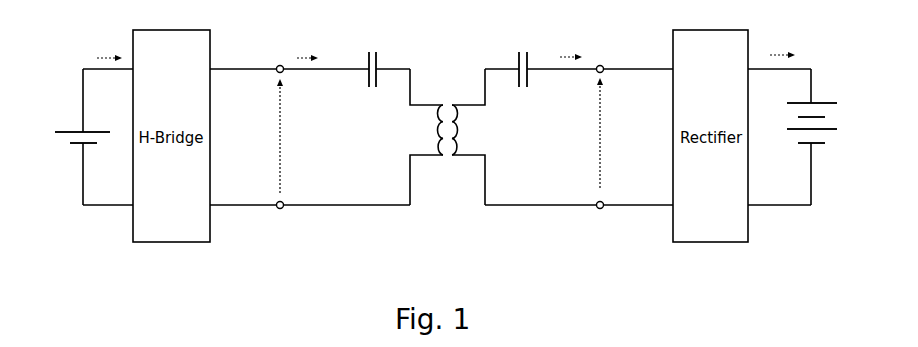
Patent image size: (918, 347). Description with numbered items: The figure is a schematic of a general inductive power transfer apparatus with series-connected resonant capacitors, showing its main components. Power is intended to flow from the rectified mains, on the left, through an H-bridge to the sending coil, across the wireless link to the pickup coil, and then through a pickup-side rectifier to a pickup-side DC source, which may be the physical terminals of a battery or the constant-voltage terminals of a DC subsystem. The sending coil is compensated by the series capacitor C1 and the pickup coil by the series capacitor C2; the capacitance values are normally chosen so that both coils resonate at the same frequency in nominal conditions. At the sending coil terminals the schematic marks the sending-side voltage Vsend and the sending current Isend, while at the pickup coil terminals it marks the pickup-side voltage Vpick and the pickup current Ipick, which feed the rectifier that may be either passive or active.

The series capacitor C1 is at (373, 57).
The series capacitor C2 is at (523, 57).
The sending coil voltage Vsend is at (298, 136).
The pickup coil voltage Vpick is at (615, 133).
The sending coil current Isend is at (309, 47).
The pickup coil current Ipick is at (569, 46).